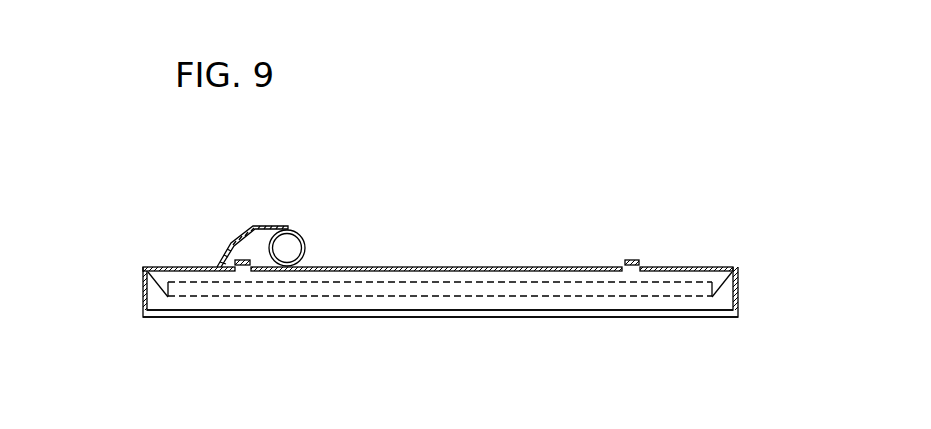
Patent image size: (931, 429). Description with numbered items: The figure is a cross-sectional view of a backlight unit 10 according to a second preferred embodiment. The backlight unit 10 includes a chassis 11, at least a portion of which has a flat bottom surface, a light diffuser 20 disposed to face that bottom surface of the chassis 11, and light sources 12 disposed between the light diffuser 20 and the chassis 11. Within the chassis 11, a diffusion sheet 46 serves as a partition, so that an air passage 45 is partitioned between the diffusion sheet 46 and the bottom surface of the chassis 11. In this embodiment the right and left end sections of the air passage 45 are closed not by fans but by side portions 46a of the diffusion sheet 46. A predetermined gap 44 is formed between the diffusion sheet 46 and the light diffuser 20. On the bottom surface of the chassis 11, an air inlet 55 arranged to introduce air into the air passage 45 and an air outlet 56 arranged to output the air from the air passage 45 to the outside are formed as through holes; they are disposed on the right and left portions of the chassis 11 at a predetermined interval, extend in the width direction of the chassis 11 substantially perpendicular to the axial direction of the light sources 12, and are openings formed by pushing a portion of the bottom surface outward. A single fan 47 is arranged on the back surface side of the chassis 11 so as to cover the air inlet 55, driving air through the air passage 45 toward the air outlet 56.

The backlight unit 10 is at (146, 214).
The chassis 11 is at (186, 267).
The light sources 12 is at (500, 282).
The light diffuser 20 is at (301, 316).
The gap 44 is at (393, 305).
The air passage 45 is at (412, 276).
The diffusion sheet 46 is at (462, 304).
The side portions 46a is at (162, 290).
The fan 47 is at (303, 234).
The air inlet 55 is at (243, 267).
The air outlet 56 is at (632, 267).